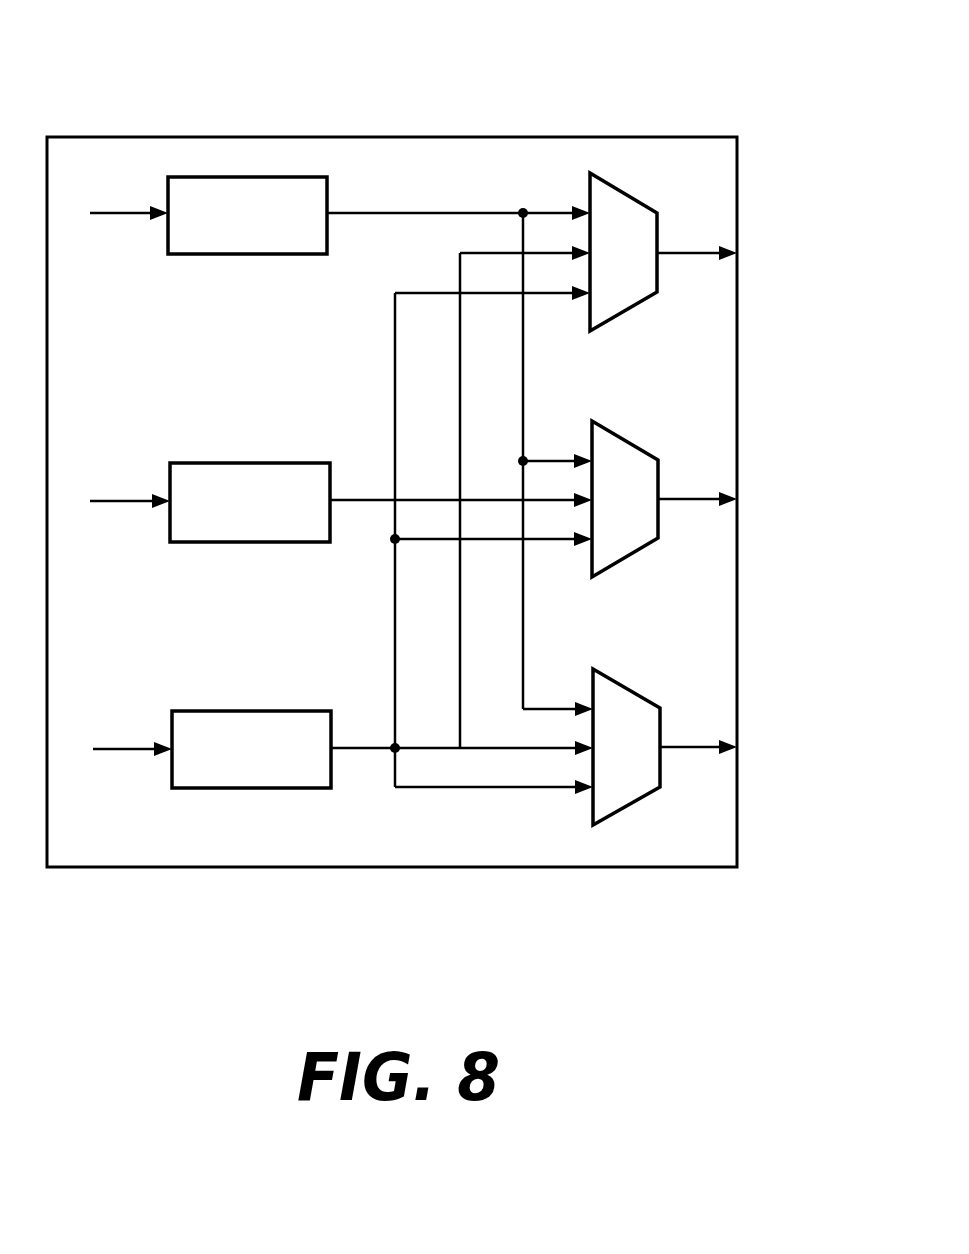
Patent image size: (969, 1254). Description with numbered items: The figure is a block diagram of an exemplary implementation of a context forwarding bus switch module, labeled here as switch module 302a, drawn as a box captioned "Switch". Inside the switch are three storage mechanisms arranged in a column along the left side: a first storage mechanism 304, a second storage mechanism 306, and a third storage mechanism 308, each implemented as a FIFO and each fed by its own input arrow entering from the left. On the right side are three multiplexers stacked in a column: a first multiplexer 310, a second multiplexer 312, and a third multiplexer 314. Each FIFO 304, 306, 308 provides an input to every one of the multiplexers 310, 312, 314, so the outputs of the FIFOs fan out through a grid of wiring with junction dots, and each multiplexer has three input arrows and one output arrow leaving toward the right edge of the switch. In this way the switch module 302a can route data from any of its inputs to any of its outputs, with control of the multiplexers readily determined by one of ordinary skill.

The first switch module 302a is at (392, 137).
The first storage mechanism 304 is at (240, 257).
The second storage mechanism 306 is at (238, 544).
The third storage mechanism 308 is at (237, 790).
The first multiplexer 310 is at (625, 193).
The second multiplexer 312 is at (627, 437).
The third multiplexer 314 is at (628, 688).